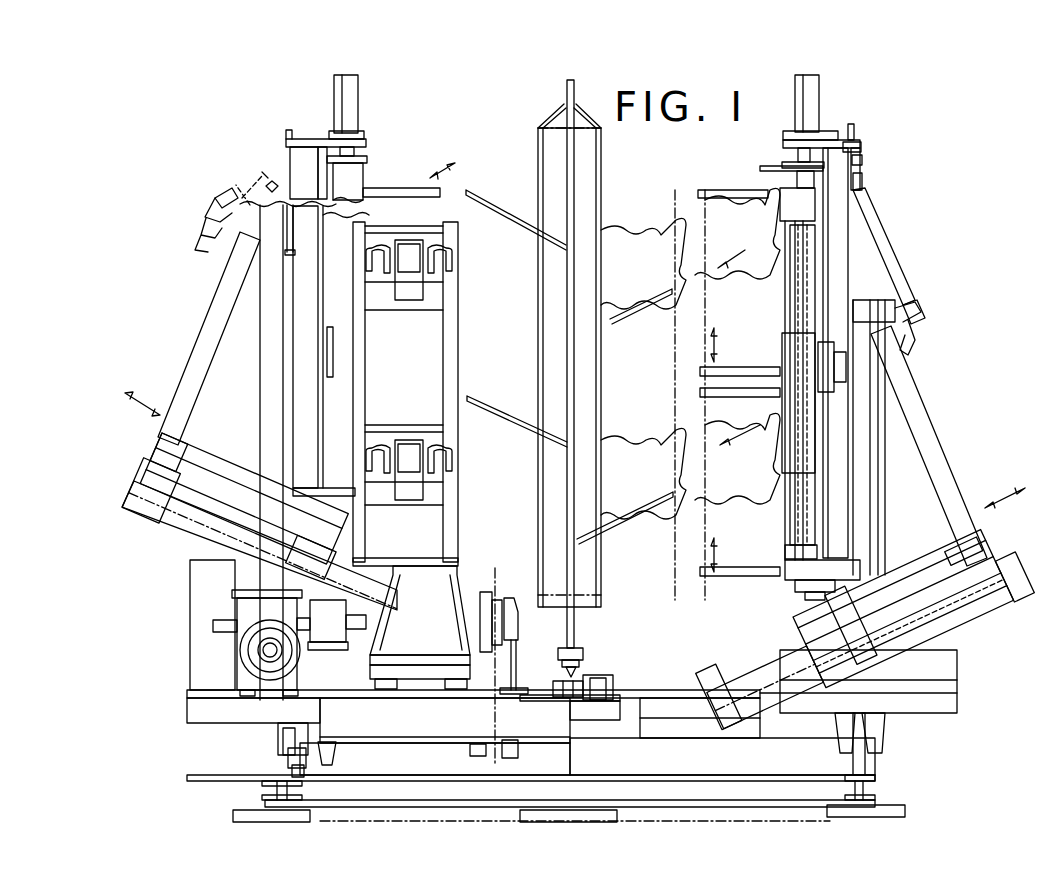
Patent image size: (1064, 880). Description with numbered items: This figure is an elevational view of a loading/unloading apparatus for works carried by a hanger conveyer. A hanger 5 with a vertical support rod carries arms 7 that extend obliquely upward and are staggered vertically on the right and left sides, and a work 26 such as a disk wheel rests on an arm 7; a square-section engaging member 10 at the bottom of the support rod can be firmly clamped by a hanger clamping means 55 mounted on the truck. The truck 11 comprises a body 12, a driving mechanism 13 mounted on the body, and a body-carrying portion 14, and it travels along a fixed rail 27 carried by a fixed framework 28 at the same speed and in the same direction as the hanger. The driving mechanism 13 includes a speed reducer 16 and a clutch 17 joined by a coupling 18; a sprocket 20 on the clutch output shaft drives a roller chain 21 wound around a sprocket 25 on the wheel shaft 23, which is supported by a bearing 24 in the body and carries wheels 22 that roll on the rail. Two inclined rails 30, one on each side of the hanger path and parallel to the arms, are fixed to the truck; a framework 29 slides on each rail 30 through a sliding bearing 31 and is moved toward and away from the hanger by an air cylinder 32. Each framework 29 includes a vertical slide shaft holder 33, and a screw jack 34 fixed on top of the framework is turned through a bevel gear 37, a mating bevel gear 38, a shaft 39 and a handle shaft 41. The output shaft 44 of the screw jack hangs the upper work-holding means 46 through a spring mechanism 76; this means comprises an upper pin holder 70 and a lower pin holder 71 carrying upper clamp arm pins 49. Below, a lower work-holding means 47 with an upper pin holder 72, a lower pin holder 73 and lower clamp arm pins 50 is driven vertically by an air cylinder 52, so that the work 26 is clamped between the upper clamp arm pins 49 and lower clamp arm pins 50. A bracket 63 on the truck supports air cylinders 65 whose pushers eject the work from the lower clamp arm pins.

The hanger 5 is at (537, 120).
The arms 7 is at (520, 215).
The engaging member 10 is at (568, 660).
The truck 11 is at (683, 752).
The body 12 is at (300, 740).
The driving mechanism 13 is at (230, 653).
The body-carrying portion 14 is at (465, 765).
The speed reducer 16 is at (237, 602).
The clutch 17 is at (472, 575).
The coupling 18 is at (326, 648).
The sprocket 20 is at (498, 610).
The roller chain 21 is at (518, 645).
The wheels 22 is at (290, 755).
The wheel shaft 23 is at (395, 745).
The bearing 24 is at (316, 748).
The sprocket 25 is at (502, 748).
The work 26 is at (690, 395).
The rail 27 is at (288, 770).
The fixed framework 28 is at (300, 795).
The framework 29 is at (218, 330).
The rail 30 is at (182, 497).
The sliding bearing 31 is at (148, 468).
The air cylinder 32 is at (765, 670).
The slide shaft holder 33 is at (300, 156).
The screw jack 34 is at (350, 98).
The bevel gear 37 is at (855, 127).
The bevel gear 38 is at (862, 147).
The shaft 39 is at (865, 158).
The shaft 41 is at (882, 258).
The output shaft 44 is at (800, 157).
The upper work-holding means 46 is at (350, 195).
The lower work-holding means 47 is at (858, 375).
The upper clamp arm pins 49 is at (425, 190).
The lower clamp arm pins 50 is at (735, 358).
The air cylinder 52 is at (810, 460).
The hanger clamping means 55 is at (600, 680).
The bracket 63 is at (430, 394).
The air cylinders 65 is at (420, 292).
The upper pin holder 70 is at (780, 205).
The lower pin holder 71 is at (778, 398).
The upper pin holder 72 is at (780, 348).
The lower pin holder 73 is at (800, 590).
The spring mechanism 76 is at (790, 176).